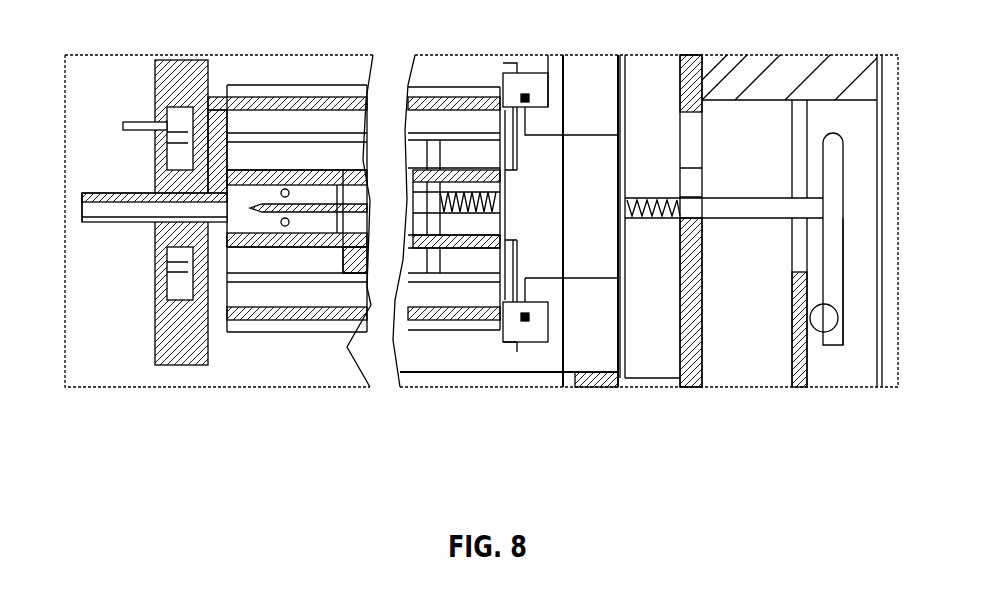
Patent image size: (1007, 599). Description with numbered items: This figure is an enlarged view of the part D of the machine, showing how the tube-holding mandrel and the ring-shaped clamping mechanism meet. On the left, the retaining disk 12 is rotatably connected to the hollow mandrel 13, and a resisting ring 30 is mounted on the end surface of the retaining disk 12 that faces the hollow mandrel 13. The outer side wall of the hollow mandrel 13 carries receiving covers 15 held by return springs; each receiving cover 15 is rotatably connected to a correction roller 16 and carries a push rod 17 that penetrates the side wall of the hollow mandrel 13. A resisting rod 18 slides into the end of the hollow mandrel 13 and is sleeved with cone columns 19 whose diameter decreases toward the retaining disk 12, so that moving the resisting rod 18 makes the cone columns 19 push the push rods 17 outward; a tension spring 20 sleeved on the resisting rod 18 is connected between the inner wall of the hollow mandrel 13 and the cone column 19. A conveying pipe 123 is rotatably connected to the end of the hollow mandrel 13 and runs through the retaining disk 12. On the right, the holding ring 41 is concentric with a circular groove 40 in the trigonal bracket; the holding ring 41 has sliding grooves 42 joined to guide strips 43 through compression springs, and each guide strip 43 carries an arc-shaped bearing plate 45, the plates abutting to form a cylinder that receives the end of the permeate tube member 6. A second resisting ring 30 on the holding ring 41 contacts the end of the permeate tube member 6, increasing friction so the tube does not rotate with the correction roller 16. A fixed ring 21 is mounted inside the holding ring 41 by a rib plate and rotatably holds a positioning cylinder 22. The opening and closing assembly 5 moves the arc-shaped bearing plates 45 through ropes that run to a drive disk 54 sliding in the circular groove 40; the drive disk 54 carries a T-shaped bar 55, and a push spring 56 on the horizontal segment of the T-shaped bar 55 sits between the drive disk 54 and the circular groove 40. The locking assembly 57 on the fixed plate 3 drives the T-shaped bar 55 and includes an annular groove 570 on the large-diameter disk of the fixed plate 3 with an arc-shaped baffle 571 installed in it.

The fixed plate 3 is at (850, 68).
The opening and closing assembly 5 is at (580, 133).
The permeate tube member 6 is at (318, 105).
The retaining disk 12 is at (167, 83).
The hollow mandrel 13 is at (178, 228).
The shaft end 123 is at (80, 223).
The receiving cover 15 is at (268, 138).
The correction roller 16 is at (392, 332).
The push rod 17 is at (327, 275).
The resisting rod 18 is at (475, 197).
The cone column 19 is at (440, 195).
The tension spring 20 is at (462, 250).
The fixed ring 21 is at (510, 260).
The positioning cylinder 22 is at (548, 300).
The resisting ring 30 is at (217, 92).
The circular groove 40 is at (637, 327).
The holding ring 41 is at (552, 72).
The sliding groove 42 is at (517, 333).
The guide strip 43 is at (523, 87).
The arc-shaped bearing plate 45 is at (303, 85).
The drive disk 54 is at (625, 100).
The T-shaped bar 55 is at (752, 220).
The push spring 56 is at (670, 227).
The locking assembly 57 is at (867, 138).
The annular groove 570 is at (863, 253).
The arc-shaped baffle 571 is at (810, 360).
The part D is at (380, 426).